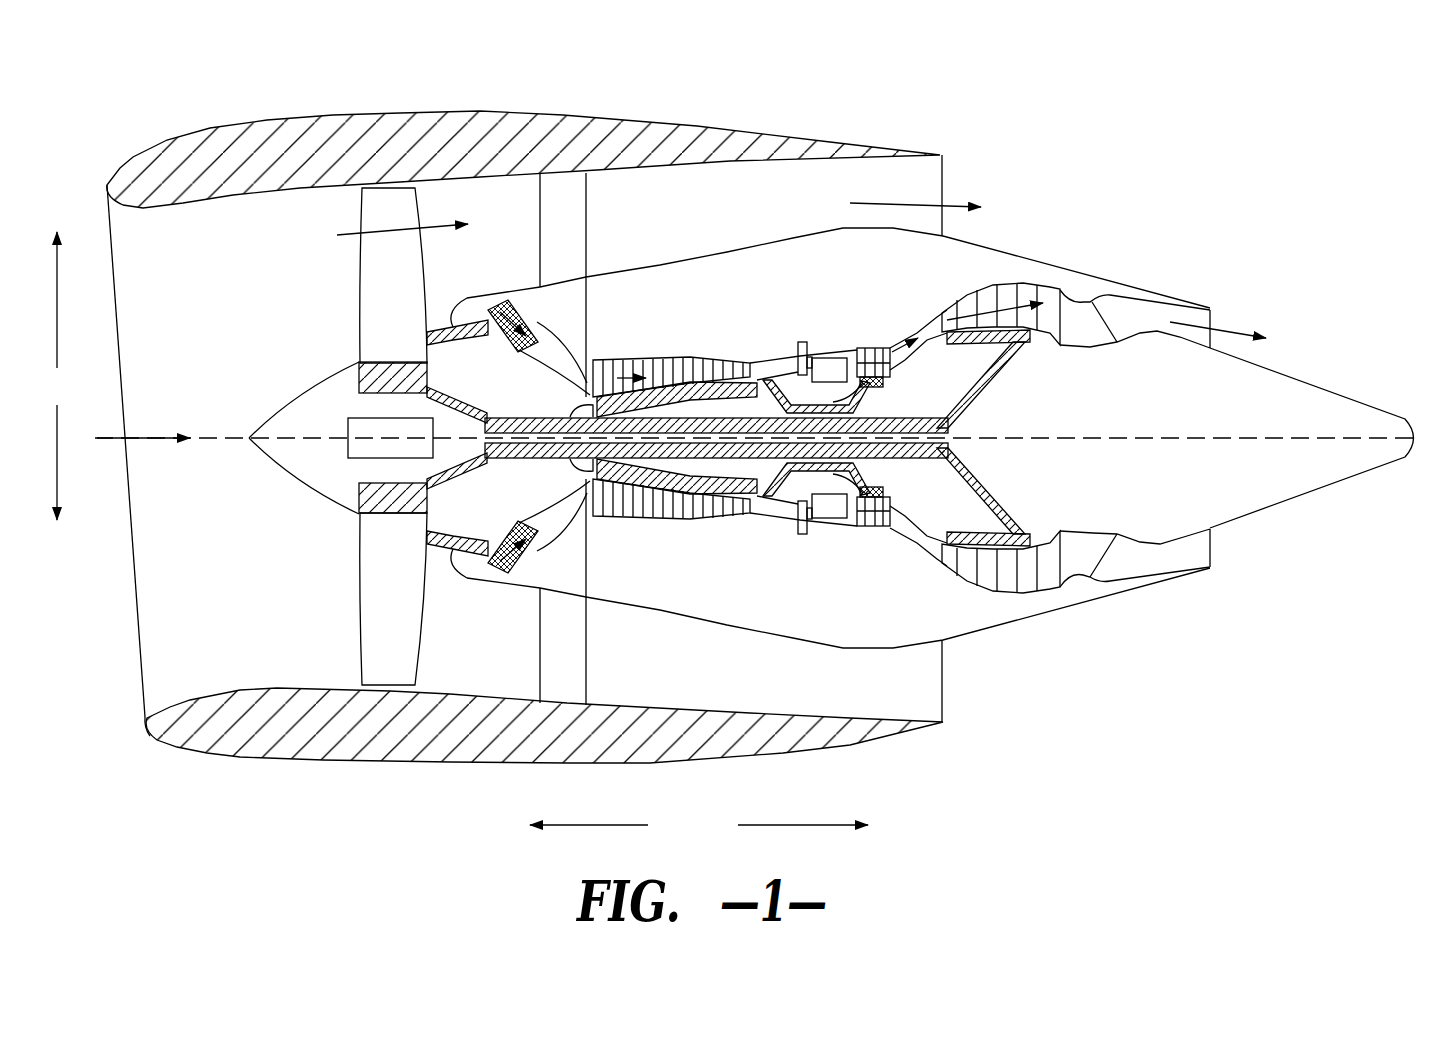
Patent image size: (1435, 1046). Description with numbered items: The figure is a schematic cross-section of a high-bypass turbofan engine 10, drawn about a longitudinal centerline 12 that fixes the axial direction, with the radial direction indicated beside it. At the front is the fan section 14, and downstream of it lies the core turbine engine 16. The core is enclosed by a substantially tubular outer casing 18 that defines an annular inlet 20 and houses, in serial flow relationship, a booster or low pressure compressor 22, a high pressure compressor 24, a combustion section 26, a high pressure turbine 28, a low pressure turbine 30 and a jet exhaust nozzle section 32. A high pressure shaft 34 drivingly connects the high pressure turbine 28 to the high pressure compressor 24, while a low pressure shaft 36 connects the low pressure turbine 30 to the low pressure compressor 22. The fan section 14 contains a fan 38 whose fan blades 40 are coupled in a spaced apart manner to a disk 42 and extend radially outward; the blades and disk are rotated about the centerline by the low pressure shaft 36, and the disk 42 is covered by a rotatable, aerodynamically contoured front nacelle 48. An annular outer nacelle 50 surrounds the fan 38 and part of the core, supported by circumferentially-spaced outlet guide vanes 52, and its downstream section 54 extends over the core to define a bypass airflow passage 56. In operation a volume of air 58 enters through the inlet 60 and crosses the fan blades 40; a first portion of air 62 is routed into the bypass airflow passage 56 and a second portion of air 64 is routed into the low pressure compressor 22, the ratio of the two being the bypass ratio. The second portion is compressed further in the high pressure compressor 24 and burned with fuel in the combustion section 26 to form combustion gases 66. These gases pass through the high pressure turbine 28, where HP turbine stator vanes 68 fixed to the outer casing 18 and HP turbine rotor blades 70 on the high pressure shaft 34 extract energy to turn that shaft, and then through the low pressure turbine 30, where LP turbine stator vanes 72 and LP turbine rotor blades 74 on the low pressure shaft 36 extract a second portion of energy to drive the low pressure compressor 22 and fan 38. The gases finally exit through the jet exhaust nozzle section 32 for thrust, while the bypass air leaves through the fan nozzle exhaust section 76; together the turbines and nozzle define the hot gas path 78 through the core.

The turbofan engine 10 is at (1197, 186).
The longitudinal centerline 12 is at (1120, 437).
The fan section 14 is at (440, 95).
The core turbine engine 16 is at (758, 310).
The outer casing 18 is at (787, 637).
The annular inlet 20 is at (478, 567).
The low pressure compressor 22 is at (540, 535).
The high pressure compressor 24 is at (618, 514).
The combustion section 26 is at (816, 519).
The high pressure turbine 28 is at (893, 515).
The low pressure turbine 30 is at (1043, 593).
The jet exhaust nozzle section 32 is at (1213, 309).
The high pressure shaft 34 is at (873, 388).
The low pressure shaft 36 is at (543, 420).
The fan 38 is at (343, 277).
The fan blades 40 is at (357, 630).
The disk 42 is at (357, 373).
The front nacelle 48 is at (277, 407).
The outer nacelle 50 is at (427, 763).
The outlet guide vanes 52 is at (590, 198).
The downstream section 54 is at (749, 126).
The bypass airflow passage 56 is at (737, 221).
The volume of air 58 is at (140, 438).
The inlet 60 is at (145, 673).
The first portion of air 62 is at (367, 227).
The second portion of air 64 is at (446, 303).
The combustion gases 66 is at (877, 350).
The HP turbine stator vanes 68 is at (860, 537).
The HP turbine rotor blades 70 is at (875, 530).
The LP turbine stator vanes 72 is at (950, 563).
The LP turbine rotor blades 74 is at (963, 573).
The fan nozzle exhaust section 76 is at (945, 180).
The hot gas path 78 is at (930, 321).